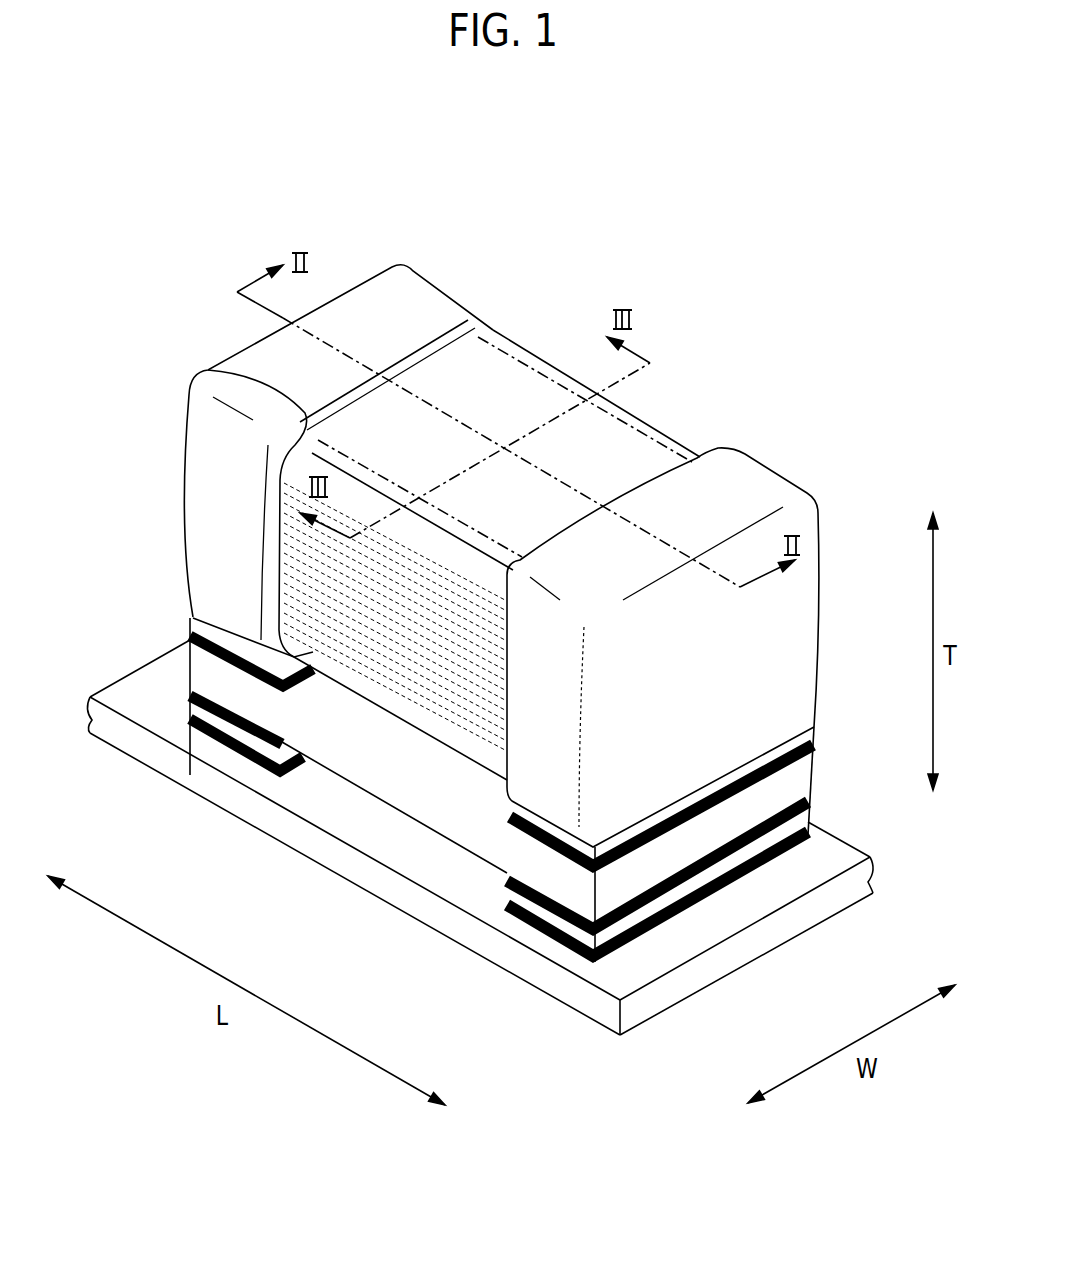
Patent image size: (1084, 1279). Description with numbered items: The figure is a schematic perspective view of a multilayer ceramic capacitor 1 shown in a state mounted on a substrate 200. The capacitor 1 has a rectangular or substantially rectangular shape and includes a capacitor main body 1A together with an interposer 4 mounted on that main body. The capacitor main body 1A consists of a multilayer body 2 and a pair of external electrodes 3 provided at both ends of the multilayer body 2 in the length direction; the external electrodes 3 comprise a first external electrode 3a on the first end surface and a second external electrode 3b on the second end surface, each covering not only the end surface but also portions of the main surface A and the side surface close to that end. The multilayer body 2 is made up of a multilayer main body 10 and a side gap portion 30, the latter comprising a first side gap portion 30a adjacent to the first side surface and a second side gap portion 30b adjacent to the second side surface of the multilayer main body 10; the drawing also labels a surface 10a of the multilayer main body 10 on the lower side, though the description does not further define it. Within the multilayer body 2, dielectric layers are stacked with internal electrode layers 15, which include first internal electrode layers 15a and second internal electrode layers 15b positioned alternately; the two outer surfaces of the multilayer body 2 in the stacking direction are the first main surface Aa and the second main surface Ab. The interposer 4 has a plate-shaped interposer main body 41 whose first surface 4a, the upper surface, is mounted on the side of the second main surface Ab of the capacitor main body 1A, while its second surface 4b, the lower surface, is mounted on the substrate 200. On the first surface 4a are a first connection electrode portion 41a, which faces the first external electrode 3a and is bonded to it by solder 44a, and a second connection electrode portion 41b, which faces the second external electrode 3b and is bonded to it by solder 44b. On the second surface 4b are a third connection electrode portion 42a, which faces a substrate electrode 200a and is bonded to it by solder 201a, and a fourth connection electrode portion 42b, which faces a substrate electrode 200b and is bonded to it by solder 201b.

The multilayer ceramic capacitor 1 is at (268, 142).
The capacitor main body 1A is at (595, 192).
The multilayer body 2 is at (672, 242).
The external electrode 3 is at (512, 517).
The first external electrode 3a is at (432, 298).
The second external electrode 3b is at (760, 485).
The interposer 4 is at (90, 697).
The first surface 4a is at (480, 790).
The second surface 4b is at (477, 853).
The multilayer main body 10 is at (494, 375).
The bottom surface of element body 10a is at (724, 745).
The internal electrode layer 15 is at (229, 885).
The first internal electrode layer 15a is at (392, 595).
The second internal electrode layer 15b is at (426, 585).
The side gap portion 30 is at (428, 397).
The first side gap portion 30a is at (323, 447).
The second side gap portion 30b is at (560, 380).
The main surface A is at (495, 645).
The first main surface Aa is at (510, 447).
The second main surface Ab is at (443, 740).
The interposer main body 41 is at (620, 890).
The first connection electrode portion 41a is at (307, 677).
The second connection electrode portion 41b is at (700, 812).
The third connection electrode portion 42a is at (257, 733).
The fourth connection electrode portion 42b is at (653, 887).
The solder 44a is at (193, 620).
The solder 44b is at (803, 731).
The substrate 200 is at (123, 692).
The substrate electrode 200a is at (203, 727).
The substrate electrode 200b is at (582, 942).
The solder 201a is at (200, 705).
The solder 201b is at (552, 903).